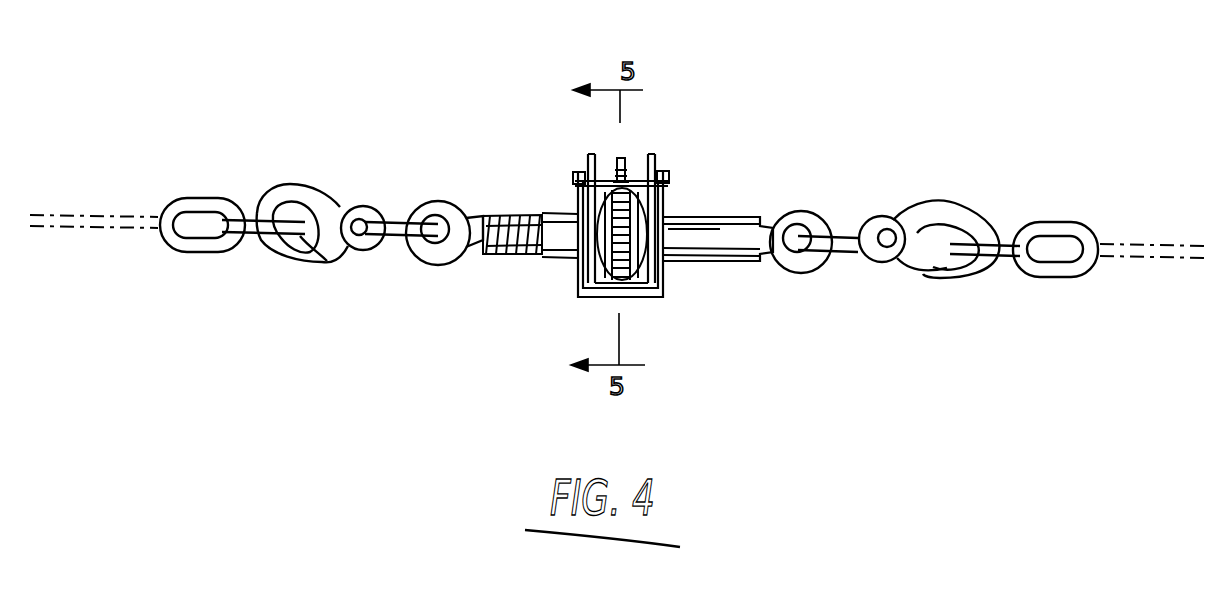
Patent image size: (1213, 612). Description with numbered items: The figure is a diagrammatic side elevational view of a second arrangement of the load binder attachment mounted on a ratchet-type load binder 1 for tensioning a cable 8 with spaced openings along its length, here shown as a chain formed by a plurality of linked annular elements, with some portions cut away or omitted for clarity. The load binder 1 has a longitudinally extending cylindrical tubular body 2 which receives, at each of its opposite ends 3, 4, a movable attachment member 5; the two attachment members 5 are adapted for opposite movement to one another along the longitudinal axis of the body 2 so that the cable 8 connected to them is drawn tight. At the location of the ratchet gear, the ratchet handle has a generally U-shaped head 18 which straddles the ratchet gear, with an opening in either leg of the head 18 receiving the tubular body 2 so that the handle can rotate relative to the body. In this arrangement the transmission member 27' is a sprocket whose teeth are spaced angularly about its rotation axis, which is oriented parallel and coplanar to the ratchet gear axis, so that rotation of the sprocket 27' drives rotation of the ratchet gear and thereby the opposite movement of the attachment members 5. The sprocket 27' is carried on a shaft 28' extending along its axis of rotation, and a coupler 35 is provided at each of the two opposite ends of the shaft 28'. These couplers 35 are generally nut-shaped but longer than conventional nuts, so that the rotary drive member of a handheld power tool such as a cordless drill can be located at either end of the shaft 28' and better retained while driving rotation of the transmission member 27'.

The load binder 1 is at (713, 263).
The tubular body 2 is at (723, 221).
The end of the body 3 is at (500, 213).
The end of the body 4 is at (760, 214).
The movable attachment member 5 is at (437, 200).
The cable 8 is at (1047, 274).
The U-shaped head 18 is at (641, 222).
The transmission member 27' is at (669, 100).
The shaft 28' is at (660, 142).
The coupler 35 is at (576, 174).